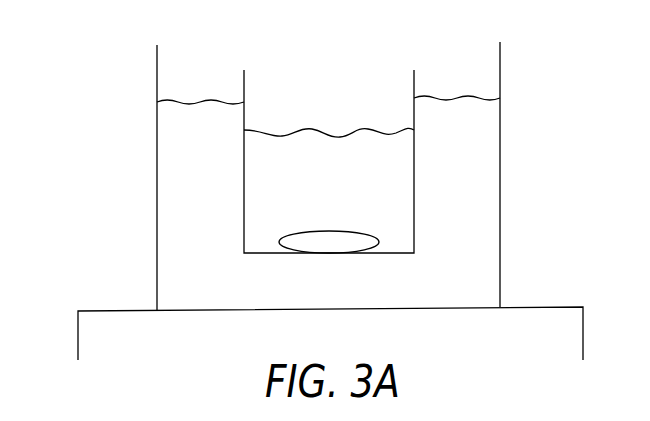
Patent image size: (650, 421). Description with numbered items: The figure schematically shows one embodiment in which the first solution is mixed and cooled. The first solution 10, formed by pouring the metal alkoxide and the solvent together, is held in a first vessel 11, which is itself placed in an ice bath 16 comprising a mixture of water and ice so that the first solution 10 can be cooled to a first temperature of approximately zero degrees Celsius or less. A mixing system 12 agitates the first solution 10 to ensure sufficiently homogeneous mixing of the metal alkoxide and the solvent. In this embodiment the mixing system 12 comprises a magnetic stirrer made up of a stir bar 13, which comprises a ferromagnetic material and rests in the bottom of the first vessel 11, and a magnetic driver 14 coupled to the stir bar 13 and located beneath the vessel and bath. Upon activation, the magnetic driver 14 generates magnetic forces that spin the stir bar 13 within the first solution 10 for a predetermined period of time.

The first solution 10 is at (383, 173).
The first vessel 11 is at (414, 85).
The mixing system 12 is at (80, 293).
The stir bar 13 is at (297, 233).
The magnetic driver 14 is at (195, 311).
The ice bath 16 is at (467, 262).